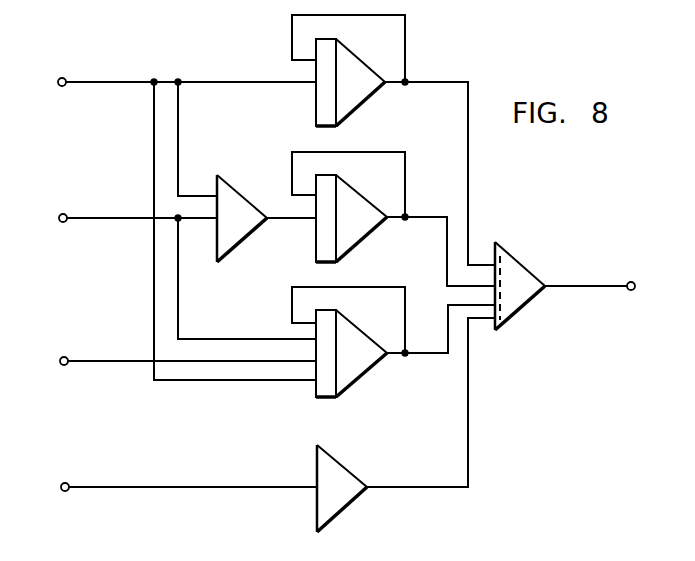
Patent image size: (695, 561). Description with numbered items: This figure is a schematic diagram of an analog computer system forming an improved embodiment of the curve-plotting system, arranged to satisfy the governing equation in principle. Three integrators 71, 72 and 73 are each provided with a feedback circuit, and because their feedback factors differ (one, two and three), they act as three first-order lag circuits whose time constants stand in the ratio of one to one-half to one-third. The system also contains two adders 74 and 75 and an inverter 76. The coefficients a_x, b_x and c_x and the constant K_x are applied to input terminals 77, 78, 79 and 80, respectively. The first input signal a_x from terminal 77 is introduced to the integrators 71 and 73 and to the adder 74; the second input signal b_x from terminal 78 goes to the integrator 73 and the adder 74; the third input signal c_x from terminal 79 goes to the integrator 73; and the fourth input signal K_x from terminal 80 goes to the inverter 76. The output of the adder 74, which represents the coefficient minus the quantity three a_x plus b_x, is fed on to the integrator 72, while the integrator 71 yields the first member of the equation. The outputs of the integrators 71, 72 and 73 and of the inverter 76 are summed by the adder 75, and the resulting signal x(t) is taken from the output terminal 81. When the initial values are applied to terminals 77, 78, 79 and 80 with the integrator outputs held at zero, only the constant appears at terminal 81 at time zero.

The integrator 71 is at (370, 98).
The integrator 72 is at (367, 239).
The integrator 73 is at (366, 372).
The adder 74 is at (244, 240).
The adder 75 is at (525, 307).
The inverter 76 is at (352, 463).
The terminal 77 is at (65, 79).
The terminal 78 is at (70, 211).
The terminal 79 is at (71, 355).
The terminal 80 is at (72, 481).
The terminal 81 is at (637, 281).